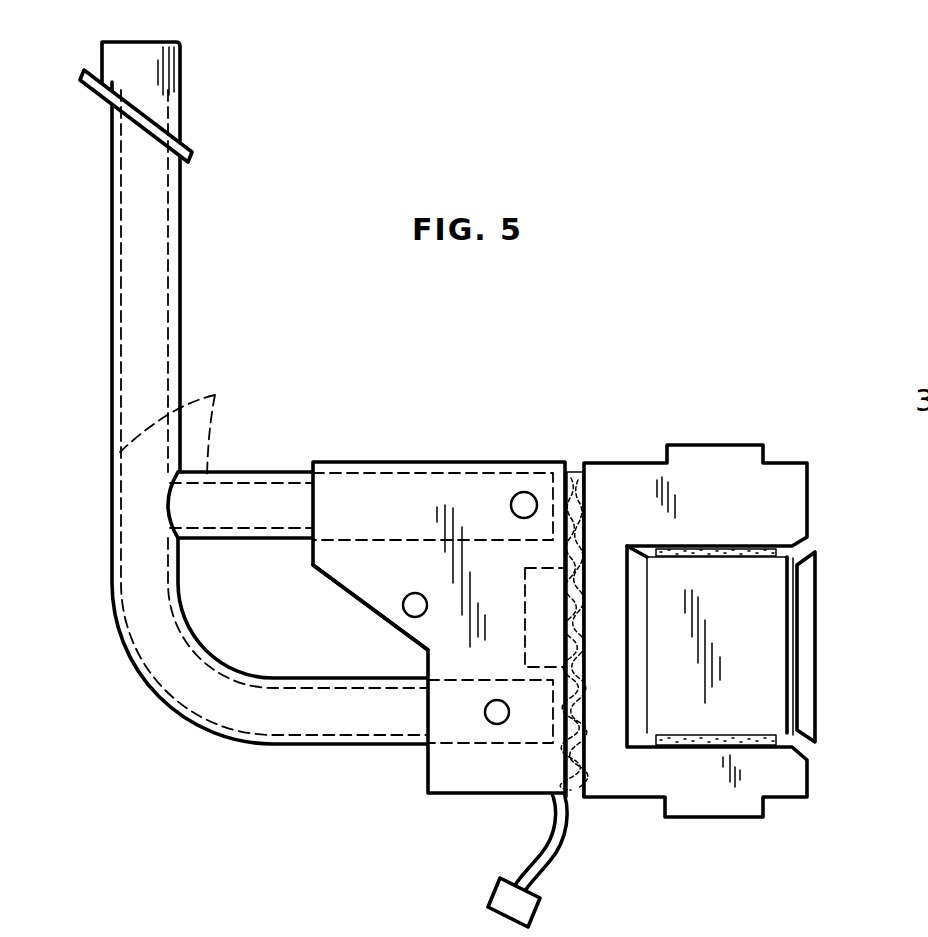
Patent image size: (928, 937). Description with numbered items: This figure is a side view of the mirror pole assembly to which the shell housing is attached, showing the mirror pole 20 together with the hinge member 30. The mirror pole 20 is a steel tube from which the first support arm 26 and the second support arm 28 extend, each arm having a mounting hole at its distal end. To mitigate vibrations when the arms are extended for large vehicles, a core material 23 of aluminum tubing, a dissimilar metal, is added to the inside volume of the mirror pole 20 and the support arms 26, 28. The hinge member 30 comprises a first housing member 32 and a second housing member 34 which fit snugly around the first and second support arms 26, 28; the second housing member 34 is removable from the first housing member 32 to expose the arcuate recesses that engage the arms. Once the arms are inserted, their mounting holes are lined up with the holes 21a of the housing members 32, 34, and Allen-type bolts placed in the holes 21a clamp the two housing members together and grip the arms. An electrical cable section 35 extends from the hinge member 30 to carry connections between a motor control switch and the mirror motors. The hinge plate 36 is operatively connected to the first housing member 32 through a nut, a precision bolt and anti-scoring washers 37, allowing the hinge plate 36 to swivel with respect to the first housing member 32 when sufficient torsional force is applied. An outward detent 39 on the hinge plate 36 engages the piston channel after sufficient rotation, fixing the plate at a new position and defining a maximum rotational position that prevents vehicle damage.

The mirror pole 20 is at (132, 175).
The core material 23 is at (192, 423).
The first support arm 26 is at (182, 686).
The second support arm 28 is at (272, 513).
The hinge member 30 is at (392, 446).
The holes 21a is at (497, 712).
The second housing member 34 is at (377, 568).
The first housing member 32 is at (635, 487).
The electrical cable section 35 is at (553, 830).
The hinge plate 36 is at (748, 638).
The anti-scoring washers 37 is at (845, 790).
The outward detent 39 is at (807, 597).